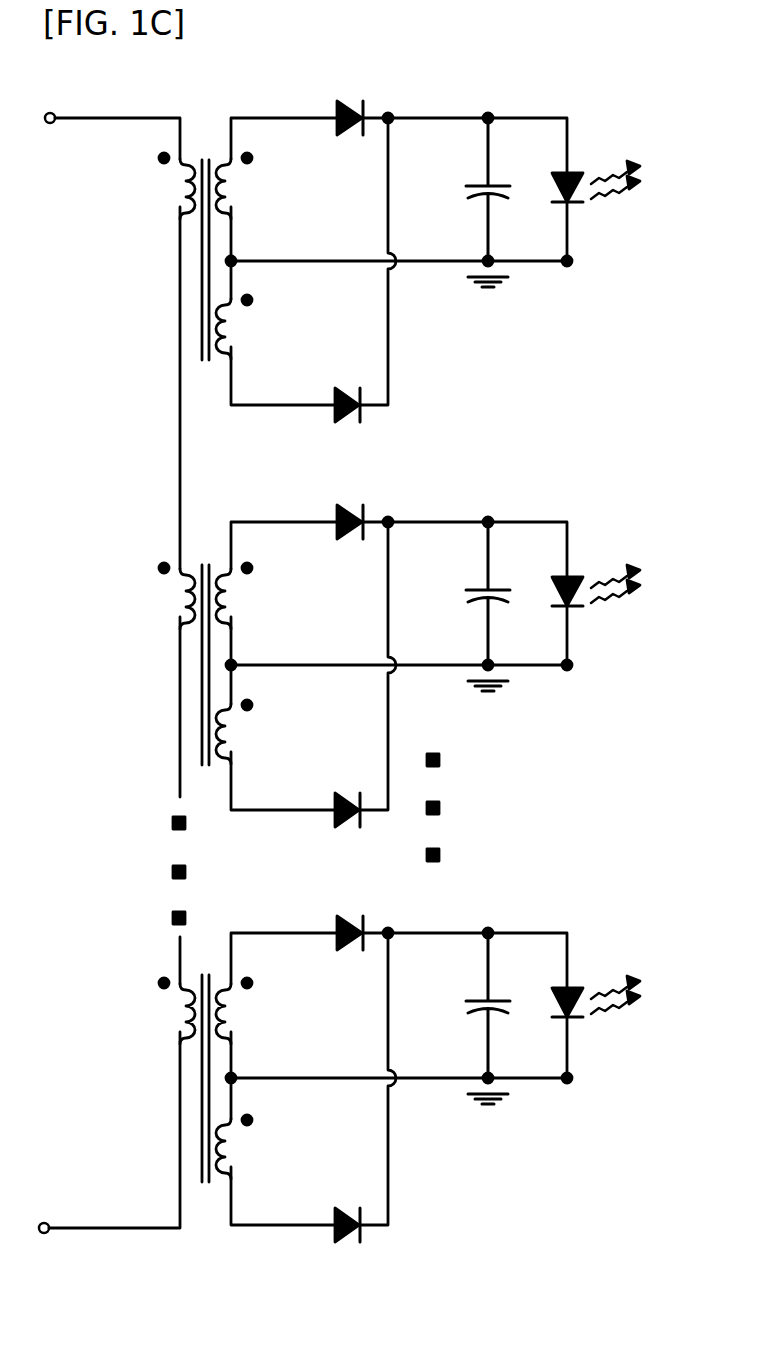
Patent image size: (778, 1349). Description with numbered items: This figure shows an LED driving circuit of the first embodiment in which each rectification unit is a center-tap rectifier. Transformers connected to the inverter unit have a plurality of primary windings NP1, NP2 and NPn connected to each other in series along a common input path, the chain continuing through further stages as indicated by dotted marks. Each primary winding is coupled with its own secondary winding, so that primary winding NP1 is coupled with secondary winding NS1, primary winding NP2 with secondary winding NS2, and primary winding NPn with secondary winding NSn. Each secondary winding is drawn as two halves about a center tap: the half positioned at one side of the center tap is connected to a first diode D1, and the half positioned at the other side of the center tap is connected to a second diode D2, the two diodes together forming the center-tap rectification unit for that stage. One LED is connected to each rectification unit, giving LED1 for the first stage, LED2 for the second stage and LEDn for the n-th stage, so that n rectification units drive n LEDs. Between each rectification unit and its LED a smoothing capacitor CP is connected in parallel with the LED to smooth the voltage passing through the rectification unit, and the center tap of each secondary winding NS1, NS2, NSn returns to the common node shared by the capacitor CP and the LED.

The primary winding NP1 is at (157, 256).
The secondary winding NS1 is at (264, 256).
The primary winding NP2 is at (157, 664).
The secondary winding NS2 is at (264, 663).
The primary winding NPn is at (157, 1078).
The secondary winding NSn is at (264, 1078).
The first diode D1 is at (349, 507).
The second diode D2 is at (347, 794).
The smoothing capacitor CP is at (465, 611).
The LED LED1 is at (609, 208).
The LED LED2 is at (609, 612).
The LED LEDn is at (609, 1023).